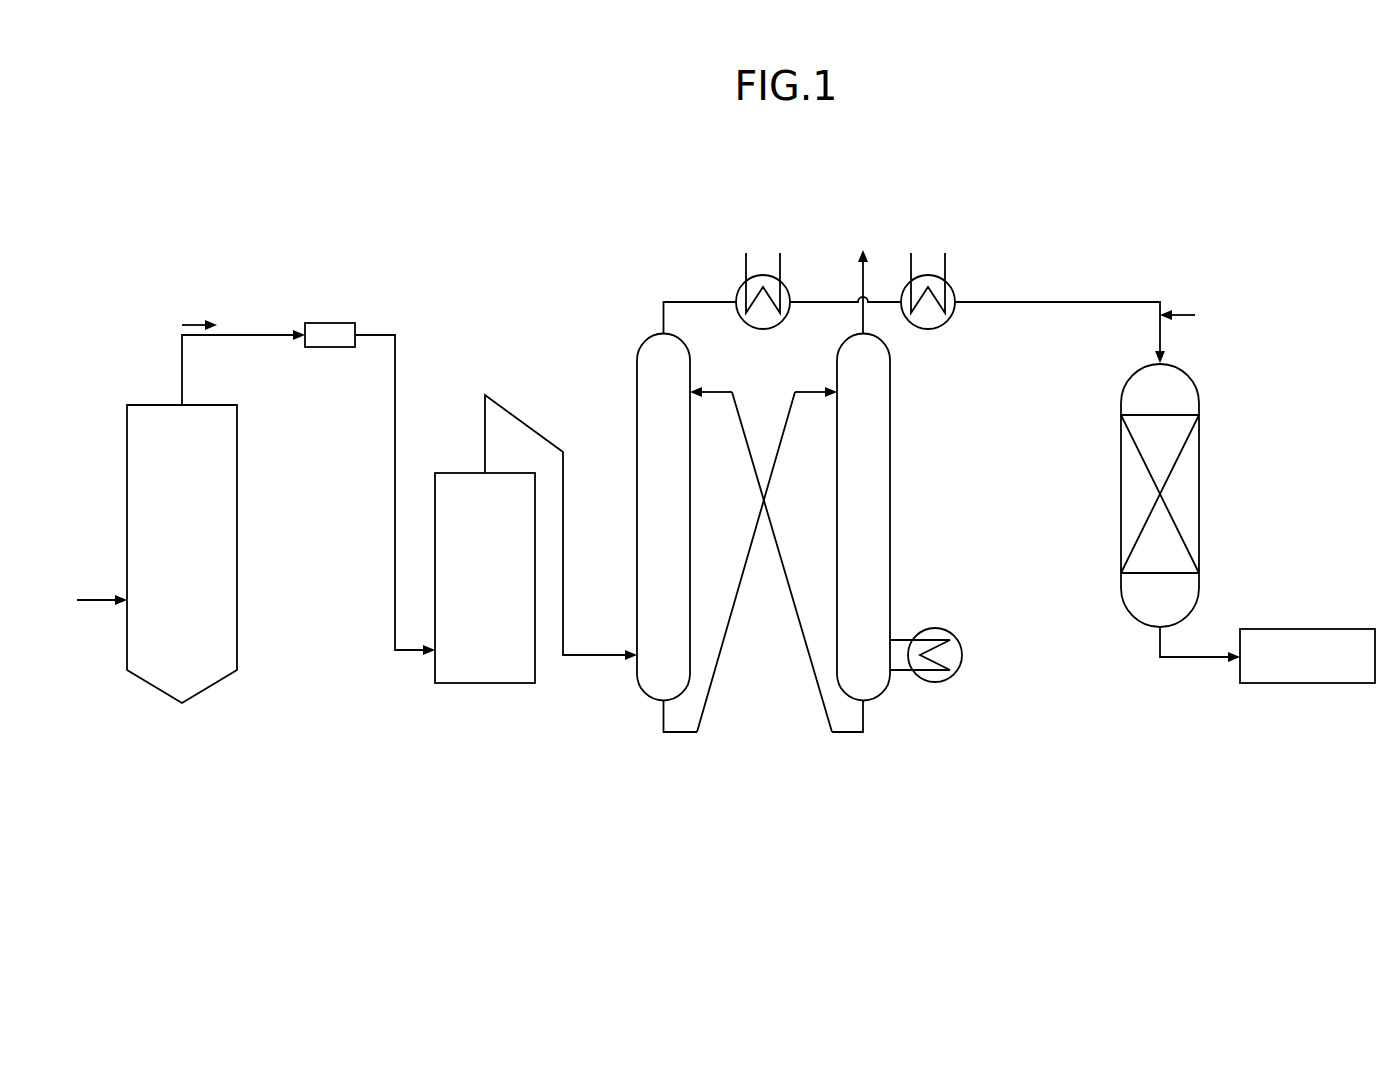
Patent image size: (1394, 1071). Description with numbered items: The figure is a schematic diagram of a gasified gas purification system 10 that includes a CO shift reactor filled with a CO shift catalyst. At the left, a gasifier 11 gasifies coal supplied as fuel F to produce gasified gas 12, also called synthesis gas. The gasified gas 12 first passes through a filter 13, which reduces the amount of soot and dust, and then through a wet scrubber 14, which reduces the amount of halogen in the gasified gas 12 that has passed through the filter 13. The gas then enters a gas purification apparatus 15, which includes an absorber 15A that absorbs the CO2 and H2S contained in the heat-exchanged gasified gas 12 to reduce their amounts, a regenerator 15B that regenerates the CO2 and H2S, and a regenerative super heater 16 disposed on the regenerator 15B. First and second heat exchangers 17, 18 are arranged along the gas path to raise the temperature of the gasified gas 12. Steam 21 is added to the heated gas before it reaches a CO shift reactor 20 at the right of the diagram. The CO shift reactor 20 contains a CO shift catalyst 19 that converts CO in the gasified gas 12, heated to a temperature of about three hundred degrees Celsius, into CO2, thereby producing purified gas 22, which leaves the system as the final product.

The gasified gas purification system 10 is at (634, 206).
The gasifier 11 is at (214, 405).
The gasified gas 12 is at (192, 322).
The filter 13 is at (330, 322).
The wet scrubber 14 is at (503, 474).
The gas purification apparatus 15 is at (763, 573).
The absorber 15A is at (650, 720).
The regenerator 15B is at (793, 546).
The regenerative super heater 16 is at (955, 631).
The first heat exchanger 17 is at (786, 287).
The second heat exchanger 18 is at (951, 287).
The CO shift catalyst 19 is at (1133, 497).
The CO shift reactor 20 is at (1146, 540).
The steam 21 is at (1185, 310).
The purified gas 22 is at (1344, 629).
The fuel F is at (95, 605).